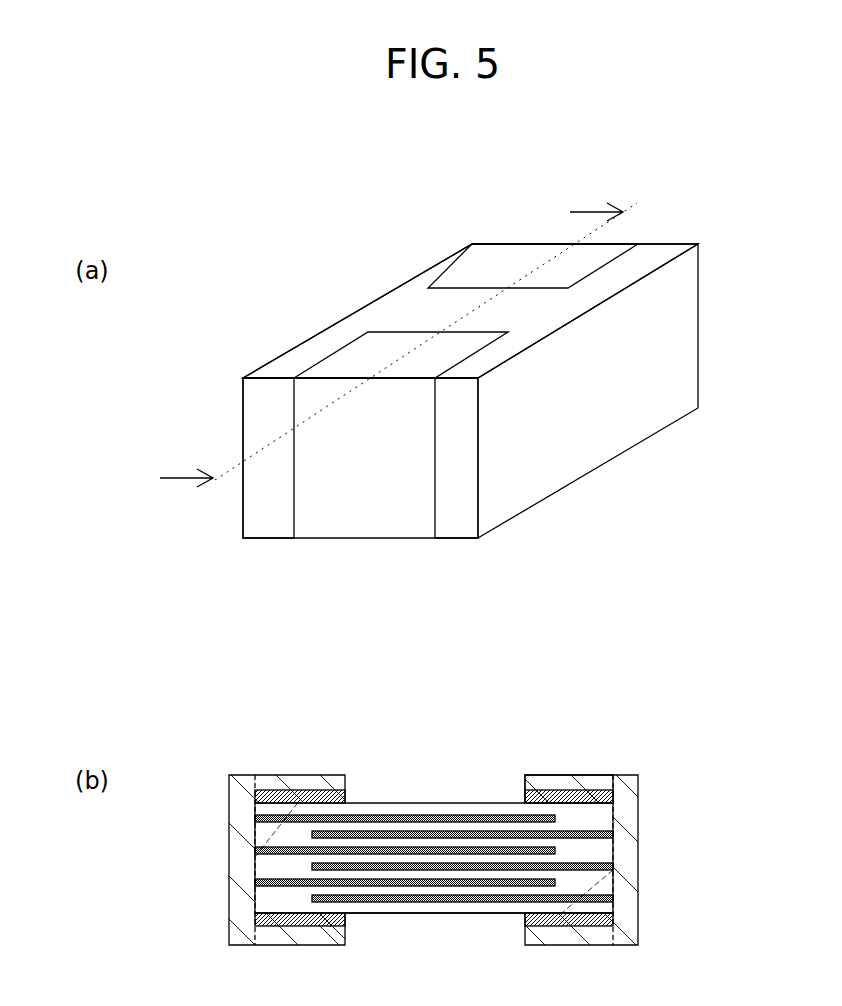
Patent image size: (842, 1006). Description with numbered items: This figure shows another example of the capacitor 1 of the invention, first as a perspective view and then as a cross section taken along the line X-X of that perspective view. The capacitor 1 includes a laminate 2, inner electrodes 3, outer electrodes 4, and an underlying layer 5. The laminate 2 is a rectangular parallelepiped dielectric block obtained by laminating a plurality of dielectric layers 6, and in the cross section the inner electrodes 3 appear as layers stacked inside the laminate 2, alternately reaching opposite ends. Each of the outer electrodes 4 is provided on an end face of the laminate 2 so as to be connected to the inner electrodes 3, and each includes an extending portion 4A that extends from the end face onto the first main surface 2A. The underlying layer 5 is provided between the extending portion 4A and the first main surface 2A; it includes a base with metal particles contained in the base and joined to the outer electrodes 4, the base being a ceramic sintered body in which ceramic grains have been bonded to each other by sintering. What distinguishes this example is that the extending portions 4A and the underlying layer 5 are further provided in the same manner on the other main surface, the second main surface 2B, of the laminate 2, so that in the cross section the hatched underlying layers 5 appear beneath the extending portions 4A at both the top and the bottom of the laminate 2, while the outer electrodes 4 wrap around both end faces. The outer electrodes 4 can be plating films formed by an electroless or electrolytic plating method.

The capacitor 1 is at (442, 554).
The laminate 2 is at (432, 265).
The first main surface 2A is at (390, 302).
The second main surface 2B is at (377, 913).
The inner electrodes 3 is at (478, 817).
The outer electrodes 4 is at (357, 488).
The extending portion 4A is at (340, 352).
The underlying layer 5 is at (299, 792).
The dielectric layers 6 is at (453, 913).